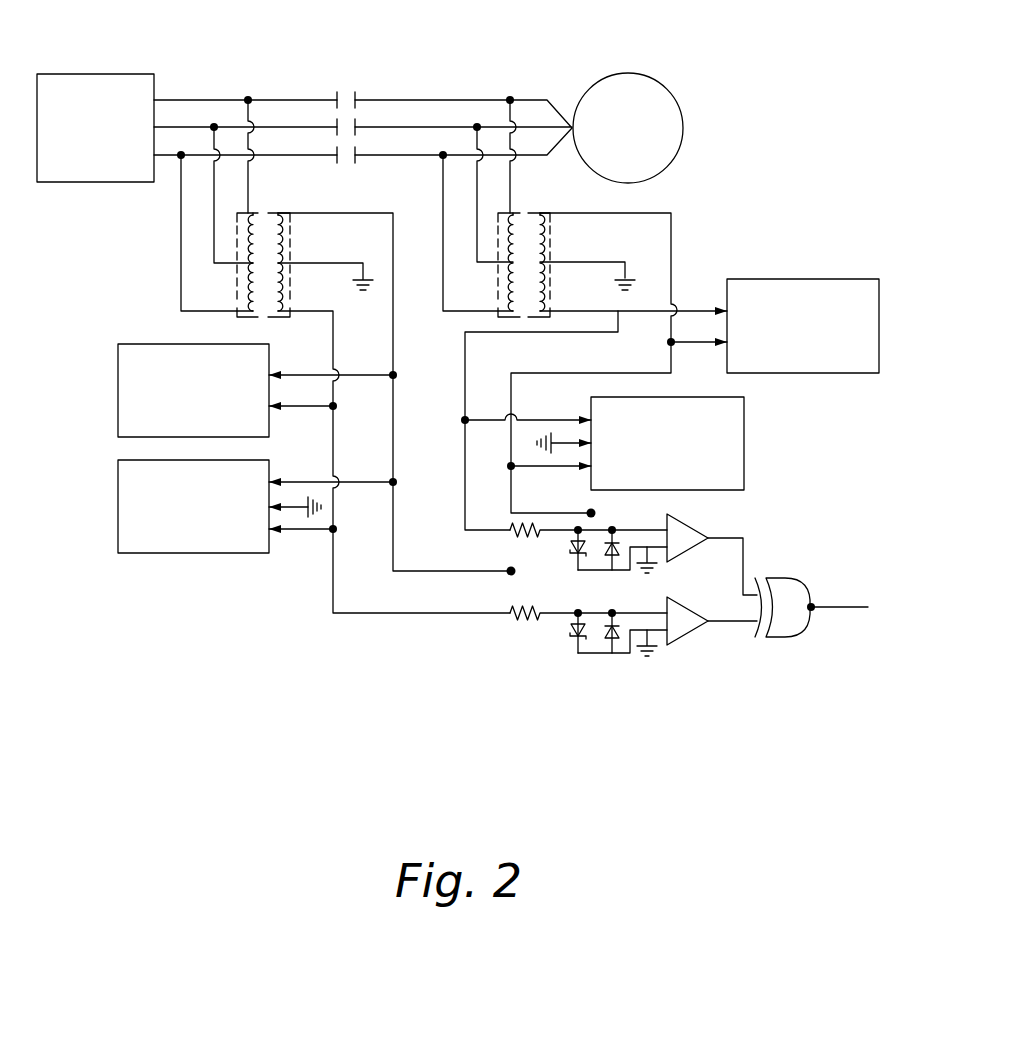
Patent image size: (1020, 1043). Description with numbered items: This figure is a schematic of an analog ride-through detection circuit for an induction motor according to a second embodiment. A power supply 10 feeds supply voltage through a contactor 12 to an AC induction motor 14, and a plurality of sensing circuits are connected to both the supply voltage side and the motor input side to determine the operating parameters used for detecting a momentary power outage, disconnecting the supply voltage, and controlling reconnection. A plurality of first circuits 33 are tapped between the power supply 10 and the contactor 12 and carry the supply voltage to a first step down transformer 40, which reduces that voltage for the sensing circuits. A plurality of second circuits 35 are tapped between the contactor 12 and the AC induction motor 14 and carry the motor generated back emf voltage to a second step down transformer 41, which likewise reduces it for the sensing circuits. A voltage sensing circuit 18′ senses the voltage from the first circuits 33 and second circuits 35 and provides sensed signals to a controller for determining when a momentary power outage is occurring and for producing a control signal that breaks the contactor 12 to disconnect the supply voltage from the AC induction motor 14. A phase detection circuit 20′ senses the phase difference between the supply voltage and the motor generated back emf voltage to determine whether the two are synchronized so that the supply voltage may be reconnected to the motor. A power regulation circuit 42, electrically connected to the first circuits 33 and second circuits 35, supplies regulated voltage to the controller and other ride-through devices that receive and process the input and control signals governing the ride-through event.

The power supply 10 is at (93, 74).
The contactor 12 is at (368, 86).
The AC induction motor 14 is at (667, 78).
The plurality of first circuits 33 is at (248, 178).
The plurality of second circuits 35 is at (510, 197).
The first step down transformer 40 is at (280, 212).
The second step down transformer 41 is at (537, 213).
The power regulation circuit 42 is at (118, 395).
The voltage sensing circuit 18′ is at (118, 508).
The phase detection circuit 20′ is at (770, 526).